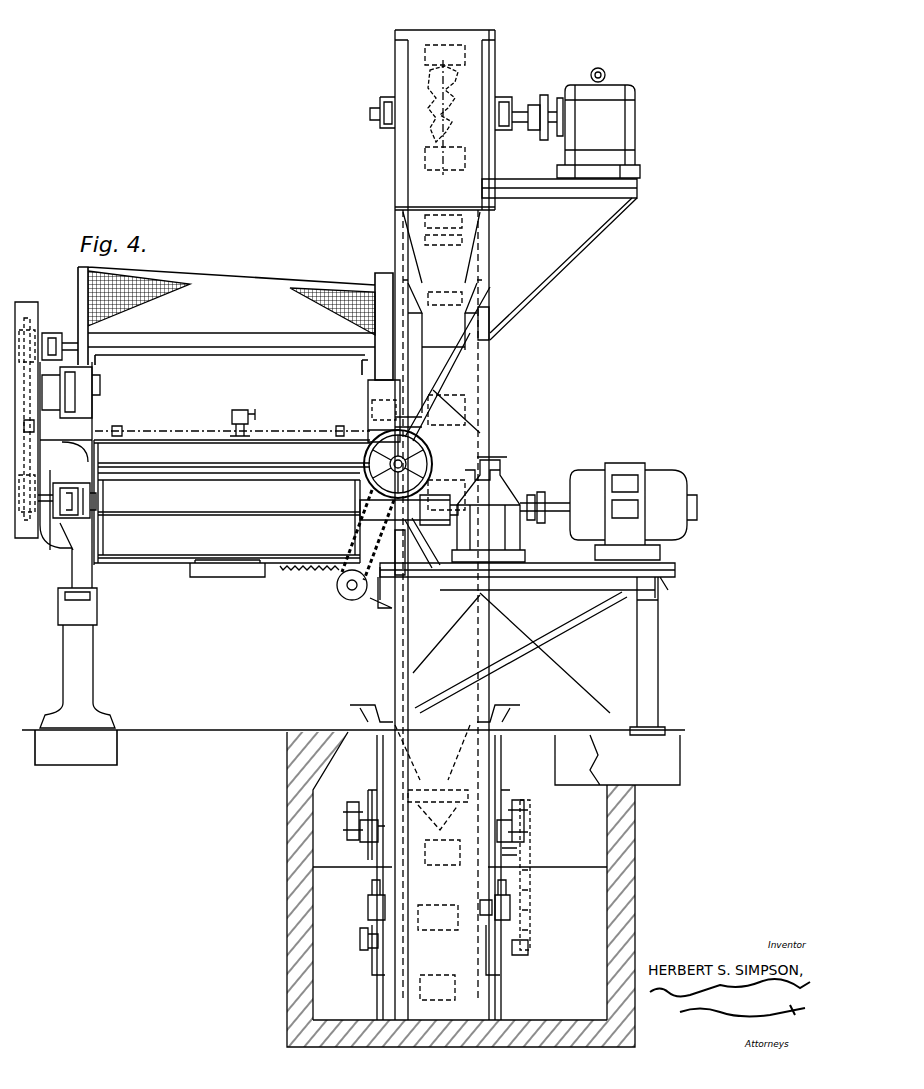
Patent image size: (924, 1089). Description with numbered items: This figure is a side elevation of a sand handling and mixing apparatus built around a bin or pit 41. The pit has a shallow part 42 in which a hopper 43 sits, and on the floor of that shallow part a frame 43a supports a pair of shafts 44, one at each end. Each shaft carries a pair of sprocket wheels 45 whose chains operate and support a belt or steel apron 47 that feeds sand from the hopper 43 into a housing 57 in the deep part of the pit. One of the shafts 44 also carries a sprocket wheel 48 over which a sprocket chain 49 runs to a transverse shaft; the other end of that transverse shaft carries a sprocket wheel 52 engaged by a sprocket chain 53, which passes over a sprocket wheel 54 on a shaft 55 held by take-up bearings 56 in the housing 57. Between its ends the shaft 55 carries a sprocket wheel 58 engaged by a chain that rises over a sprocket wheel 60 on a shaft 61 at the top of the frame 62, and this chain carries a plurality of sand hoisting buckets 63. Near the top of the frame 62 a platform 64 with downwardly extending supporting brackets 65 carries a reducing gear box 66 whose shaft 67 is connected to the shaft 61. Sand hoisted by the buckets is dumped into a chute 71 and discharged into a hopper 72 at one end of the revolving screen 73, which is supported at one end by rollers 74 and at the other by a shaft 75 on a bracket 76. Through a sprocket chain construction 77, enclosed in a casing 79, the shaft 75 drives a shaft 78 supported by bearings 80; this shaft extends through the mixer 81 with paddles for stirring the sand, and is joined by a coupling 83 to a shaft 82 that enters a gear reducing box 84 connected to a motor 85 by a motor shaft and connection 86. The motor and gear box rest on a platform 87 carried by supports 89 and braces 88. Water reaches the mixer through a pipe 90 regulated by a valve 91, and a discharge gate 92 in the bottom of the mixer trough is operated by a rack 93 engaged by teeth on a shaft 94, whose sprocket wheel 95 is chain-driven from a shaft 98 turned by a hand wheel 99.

The bin or pit 41 is at (314, 906).
The shallow part 42 is at (596, 826).
The hopper 43 is at (504, 712).
The frame 43a is at (518, 850).
The shafts 44 is at (370, 840).
The sprocket wheels 45 is at (372, 790).
The belt or steel apron 47 is at (438, 819).
The sprocket wheel 48 is at (360, 836).
The sprocket chain 49 is at (346, 810).
The sprocket wheel 52 is at (524, 822).
The sprocket chain 53 is at (530, 882).
The sprocket wheel 54 is at (528, 942).
The shaft 55 is at (372, 955).
The take-up bearings 56 is at (368, 906).
The housing 57 is at (382, 978).
The sprocket wheel 58 is at (490, 978).
The sprocket wheel 60 is at (490, 72).
The shaft 61 is at (524, 104).
The frame 62 is at (490, 50).
The sand hoisting buckets 63 is at (490, 220).
The platform 64 is at (632, 190).
The supporting brackets 65 is at (582, 240).
The reducing gear box 66 is at (608, 148).
The shaft 67 is at (556, 96).
The chute 71 is at (422, 184).
The hopper 72 is at (462, 302).
The revolving screen 73 is at (235, 312).
The rollers 74 is at (370, 406).
The shaft 75 is at (72, 338).
The bracket 76 is at (70, 380).
The sprocket chain construction 77 is at (28, 305).
The shaft 78 is at (50, 522).
The casing 79 is at (28, 538).
The bearings 80 is at (70, 482).
The mixer 81 is at (152, 546).
The shaft 82 is at (400, 587).
The coupling 83 is at (417, 546).
The gear reducing box 84 is at (494, 482).
The motor 85 is at (598, 468).
The motor shaft and connection 86 is at (555, 496).
The platform 87 is at (556, 582).
The braces 88 is at (563, 672).
The supports 89 is at (645, 644).
The pipe 90 is at (160, 428).
The valve 91 is at (240, 410).
The discharge gate 92 is at (216, 566).
The rack 93 is at (290, 571).
The shaft 94 is at (338, 584).
The sprocket wheel 95 is at (348, 598).
The shaft 98 is at (408, 462).
The hand wheel 99 is at (430, 472).